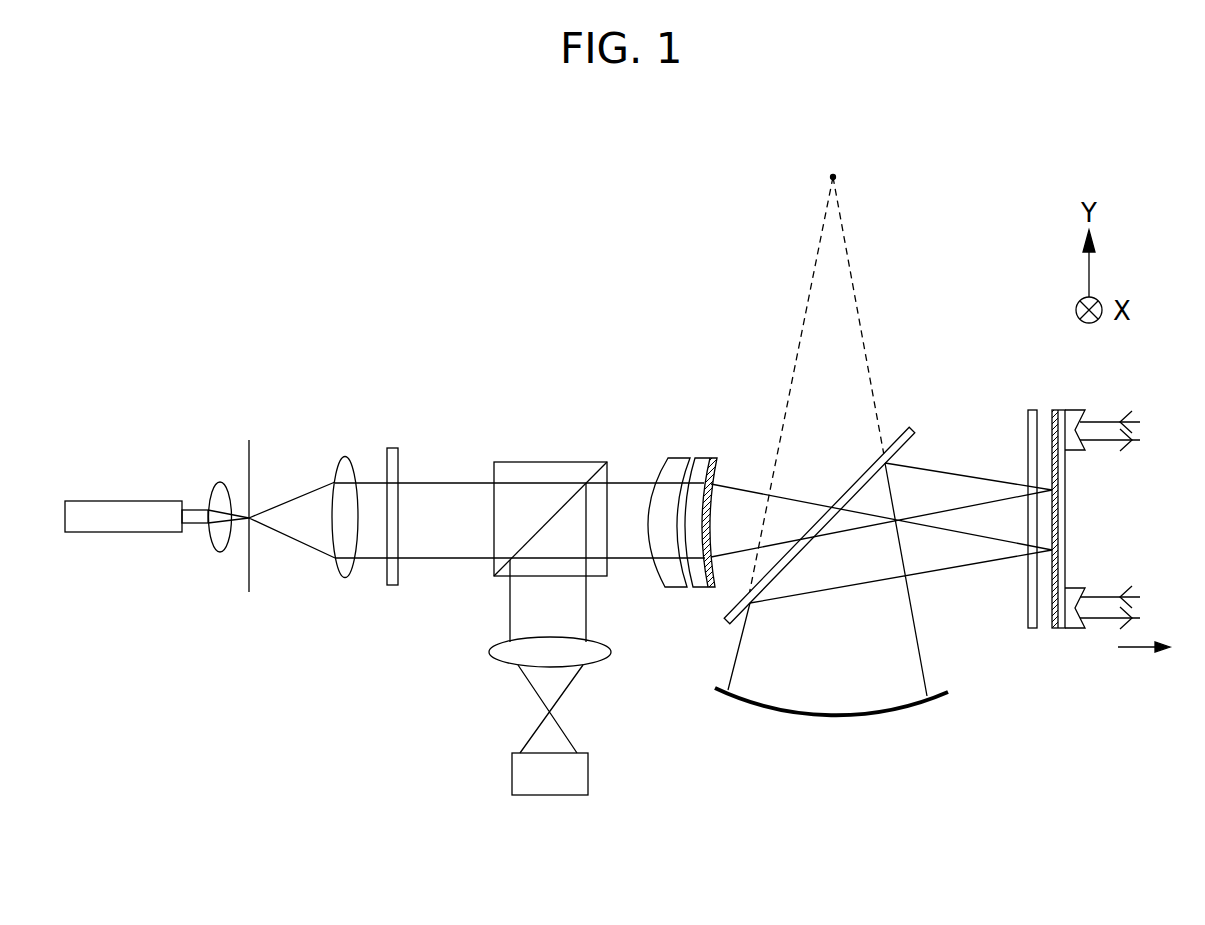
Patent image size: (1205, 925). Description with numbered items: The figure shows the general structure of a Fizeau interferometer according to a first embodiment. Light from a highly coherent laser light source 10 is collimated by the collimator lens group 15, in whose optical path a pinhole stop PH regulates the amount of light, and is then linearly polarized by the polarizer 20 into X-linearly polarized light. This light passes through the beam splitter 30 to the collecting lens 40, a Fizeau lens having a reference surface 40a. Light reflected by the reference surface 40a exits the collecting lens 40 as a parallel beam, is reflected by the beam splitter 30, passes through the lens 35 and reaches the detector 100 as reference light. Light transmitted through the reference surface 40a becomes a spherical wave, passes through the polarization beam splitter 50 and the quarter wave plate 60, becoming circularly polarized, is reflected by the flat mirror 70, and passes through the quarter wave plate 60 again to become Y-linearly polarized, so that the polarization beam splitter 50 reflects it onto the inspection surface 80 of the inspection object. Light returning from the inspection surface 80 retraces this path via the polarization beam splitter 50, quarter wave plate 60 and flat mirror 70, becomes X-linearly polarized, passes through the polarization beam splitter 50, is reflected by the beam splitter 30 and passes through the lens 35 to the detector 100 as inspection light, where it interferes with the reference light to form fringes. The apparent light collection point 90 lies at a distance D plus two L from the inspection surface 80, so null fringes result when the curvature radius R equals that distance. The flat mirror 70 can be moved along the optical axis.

The light source 10 is at (83, 500).
The collimator lens group 15 is at (355, 387).
The polarizer 20 is at (394, 447).
The beam splitter 30 is at (558, 462).
The lens 35 is at (491, 653).
The collecting lens 40 is at (690, 459).
The reference surface 40a is at (713, 485).
The polarization beam splitter 50 is at (911, 426).
The quarter wave plate 60 is at (1033, 410).
The flat mirror 70 is at (1063, 410).
The inspection surface 80 is at (903, 712).
The apparent light collection point 90 is at (833, 173).
The detector 100 is at (578, 781).